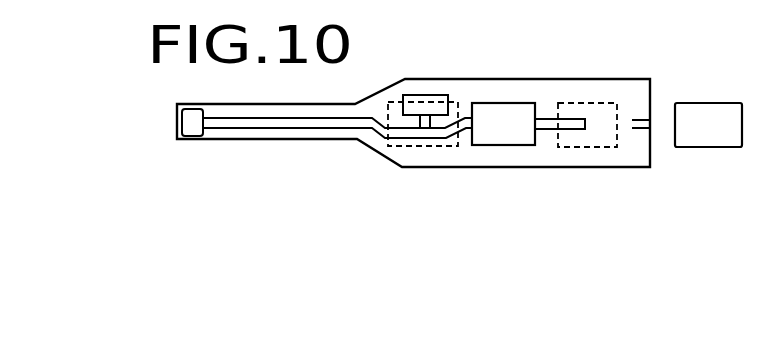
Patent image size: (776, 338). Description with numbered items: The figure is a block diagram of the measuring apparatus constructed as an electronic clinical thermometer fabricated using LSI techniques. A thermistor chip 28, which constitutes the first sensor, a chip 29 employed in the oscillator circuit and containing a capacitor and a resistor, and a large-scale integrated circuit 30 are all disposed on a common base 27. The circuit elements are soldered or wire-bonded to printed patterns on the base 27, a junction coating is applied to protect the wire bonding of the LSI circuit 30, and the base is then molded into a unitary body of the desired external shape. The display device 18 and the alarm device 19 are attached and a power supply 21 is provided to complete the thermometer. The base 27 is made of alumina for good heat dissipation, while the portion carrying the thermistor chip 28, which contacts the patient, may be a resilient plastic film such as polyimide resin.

The base 27 is at (670, 60).
The thermistor chip 28 is at (195, 131).
The chip 29 is at (425, 95).
The display device 18 is at (392, 150).
The large-scale integrated circuit 30 is at (516, 146).
The alarm device 19 is at (586, 103).
The power supply 21 is at (727, 146).